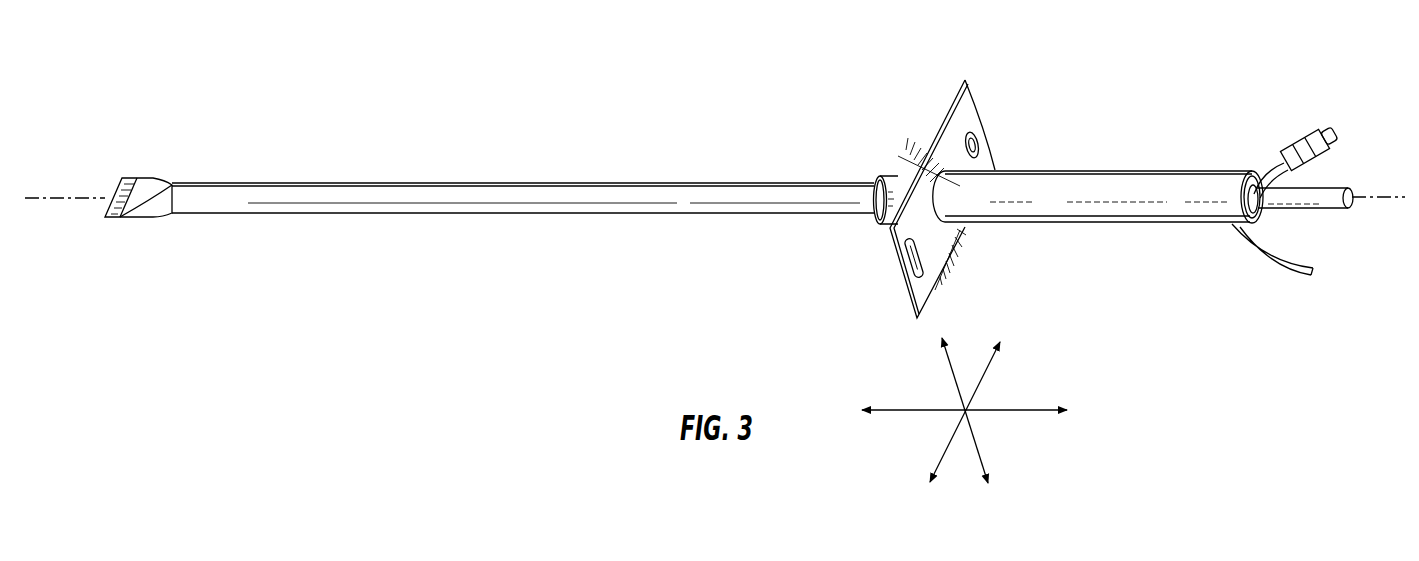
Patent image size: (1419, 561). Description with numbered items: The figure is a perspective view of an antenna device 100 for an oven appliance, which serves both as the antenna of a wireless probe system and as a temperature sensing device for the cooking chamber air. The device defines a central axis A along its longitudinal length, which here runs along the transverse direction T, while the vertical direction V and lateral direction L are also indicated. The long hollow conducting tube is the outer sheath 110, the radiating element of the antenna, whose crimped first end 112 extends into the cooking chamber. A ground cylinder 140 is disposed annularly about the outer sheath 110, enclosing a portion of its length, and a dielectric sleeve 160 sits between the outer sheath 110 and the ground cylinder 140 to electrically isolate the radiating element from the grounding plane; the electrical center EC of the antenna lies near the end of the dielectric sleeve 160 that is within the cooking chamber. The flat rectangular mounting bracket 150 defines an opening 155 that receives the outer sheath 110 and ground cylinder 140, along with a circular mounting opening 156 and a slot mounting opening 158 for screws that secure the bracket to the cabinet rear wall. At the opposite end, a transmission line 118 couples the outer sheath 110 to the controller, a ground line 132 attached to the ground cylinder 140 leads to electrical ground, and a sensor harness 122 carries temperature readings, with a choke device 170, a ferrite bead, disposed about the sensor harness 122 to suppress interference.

The antenna device 100 is at (647, 82).
The outer sheath 110 is at (520, 182).
The first end 112 is at (137, 167).
The transmission line 118 is at (1320, 210).
The sensor harness 122 is at (1325, 140).
The ground line 132 is at (1265, 262).
The ground cylinder 140 is at (1120, 222).
The mounting bracket 150 is at (965, 78).
The opening 155 is at (943, 197).
The circular mounting opening 156 is at (975, 147).
The slot mounting opening 158 is at (925, 255).
The dielectric sleeve 160 is at (880, 178).
The choke device 170 is at (1293, 145).
The electrical center EC is at (880, 227).
The central axis A is at (1390, 190).
The transverse direction T is at (888, 413).
The vertical direction V is at (985, 373).
The lateral direction L is at (975, 452).